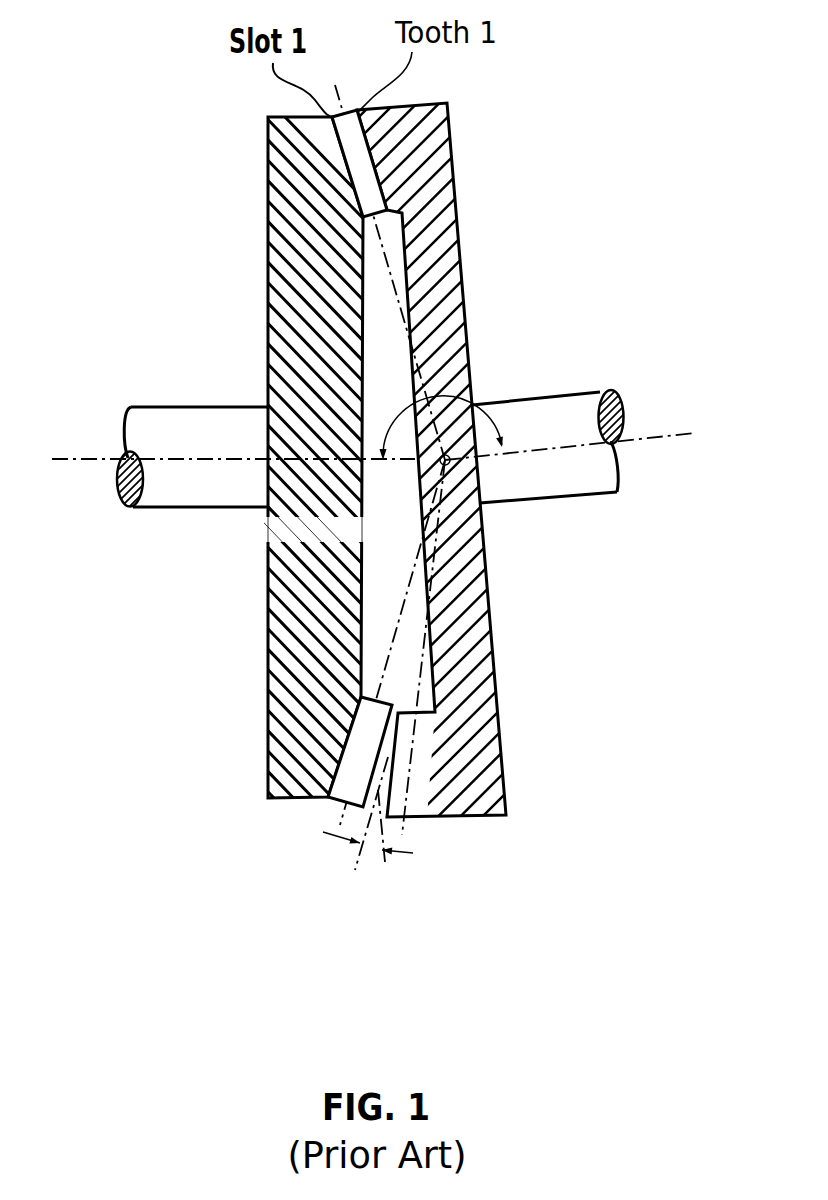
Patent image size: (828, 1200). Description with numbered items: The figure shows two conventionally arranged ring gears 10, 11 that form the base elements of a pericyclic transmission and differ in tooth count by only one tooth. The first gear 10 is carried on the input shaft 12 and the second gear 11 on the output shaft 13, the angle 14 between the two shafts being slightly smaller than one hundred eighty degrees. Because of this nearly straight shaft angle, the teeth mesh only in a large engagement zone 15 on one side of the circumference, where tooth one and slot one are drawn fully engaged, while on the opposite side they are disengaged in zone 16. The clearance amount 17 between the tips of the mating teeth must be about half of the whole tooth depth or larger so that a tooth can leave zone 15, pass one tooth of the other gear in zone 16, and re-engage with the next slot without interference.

The ring gear 10 is at (300, 263).
The ring gear 11 is at (433, 207).
The input shaft 12 is at (174, 490).
The output shaft 13 is at (580, 472).
The angle 14 is at (448, 390).
The zone 15 is at (398, 176).
The zone 16 is at (388, 758).
The clearance amount 17 is at (368, 848).